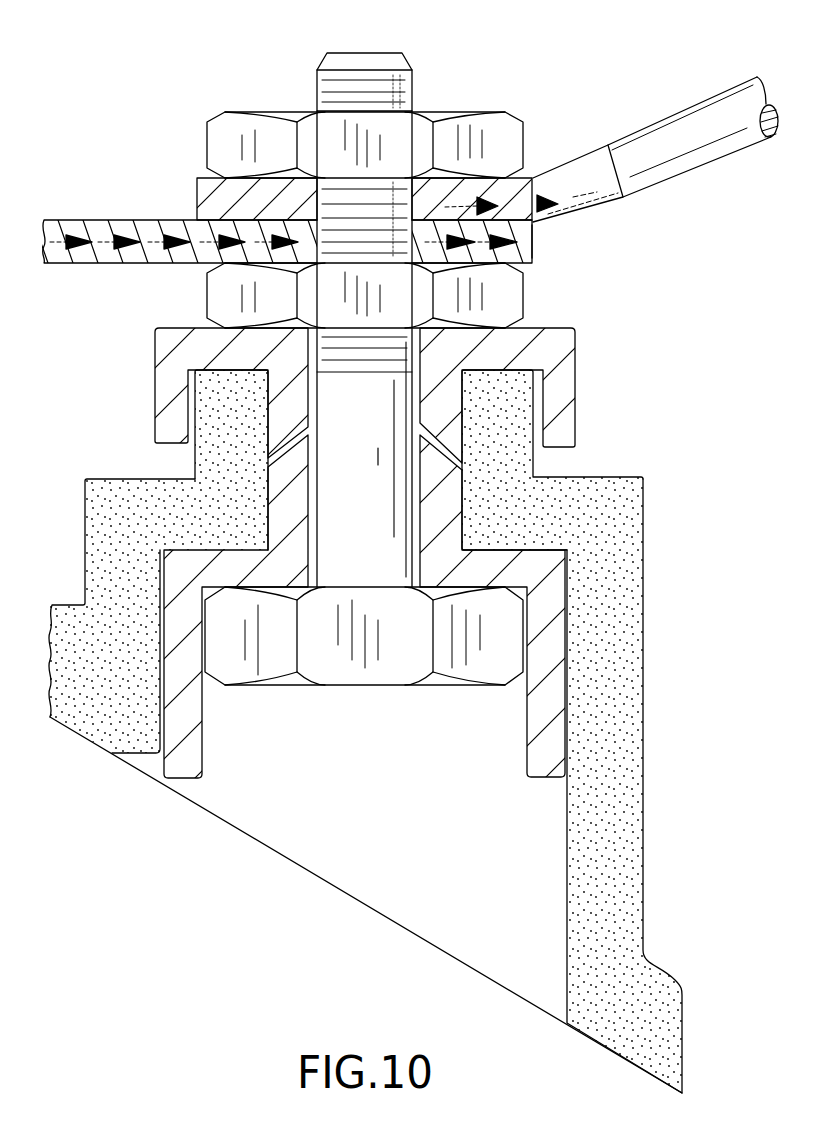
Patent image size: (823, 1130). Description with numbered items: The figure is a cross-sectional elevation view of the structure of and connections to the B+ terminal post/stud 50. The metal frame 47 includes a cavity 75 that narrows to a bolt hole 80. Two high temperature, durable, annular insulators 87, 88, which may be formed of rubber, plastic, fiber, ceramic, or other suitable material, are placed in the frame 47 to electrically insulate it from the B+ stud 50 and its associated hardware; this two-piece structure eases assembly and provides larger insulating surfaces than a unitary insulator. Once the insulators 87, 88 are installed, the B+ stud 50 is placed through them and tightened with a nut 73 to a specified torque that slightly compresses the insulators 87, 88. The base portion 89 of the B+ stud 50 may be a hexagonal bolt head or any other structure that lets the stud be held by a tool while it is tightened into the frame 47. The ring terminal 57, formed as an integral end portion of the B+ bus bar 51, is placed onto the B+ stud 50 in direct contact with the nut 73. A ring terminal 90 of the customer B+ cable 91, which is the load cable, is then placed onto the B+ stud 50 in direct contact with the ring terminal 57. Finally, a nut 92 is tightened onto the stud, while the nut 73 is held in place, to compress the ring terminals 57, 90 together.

The frame 47 is at (86, 490).
The B+ terminal post/stud 50 is at (317, 83).
The B+ bus bar 51 is at (130, 220).
The ring terminal 57 is at (533, 240).
The nut 73 is at (522, 297).
The cavity 75 is at (567, 820).
The bolt hole 80 is at (462, 512).
The insulator 87 is at (268, 483).
The insulator 88 is at (155, 352).
The base portion 89 is at (490, 655).
The ring terminal 90 is at (533, 178).
The customer B+ cable 91 is at (648, 122).
The nut 92 is at (452, 112).